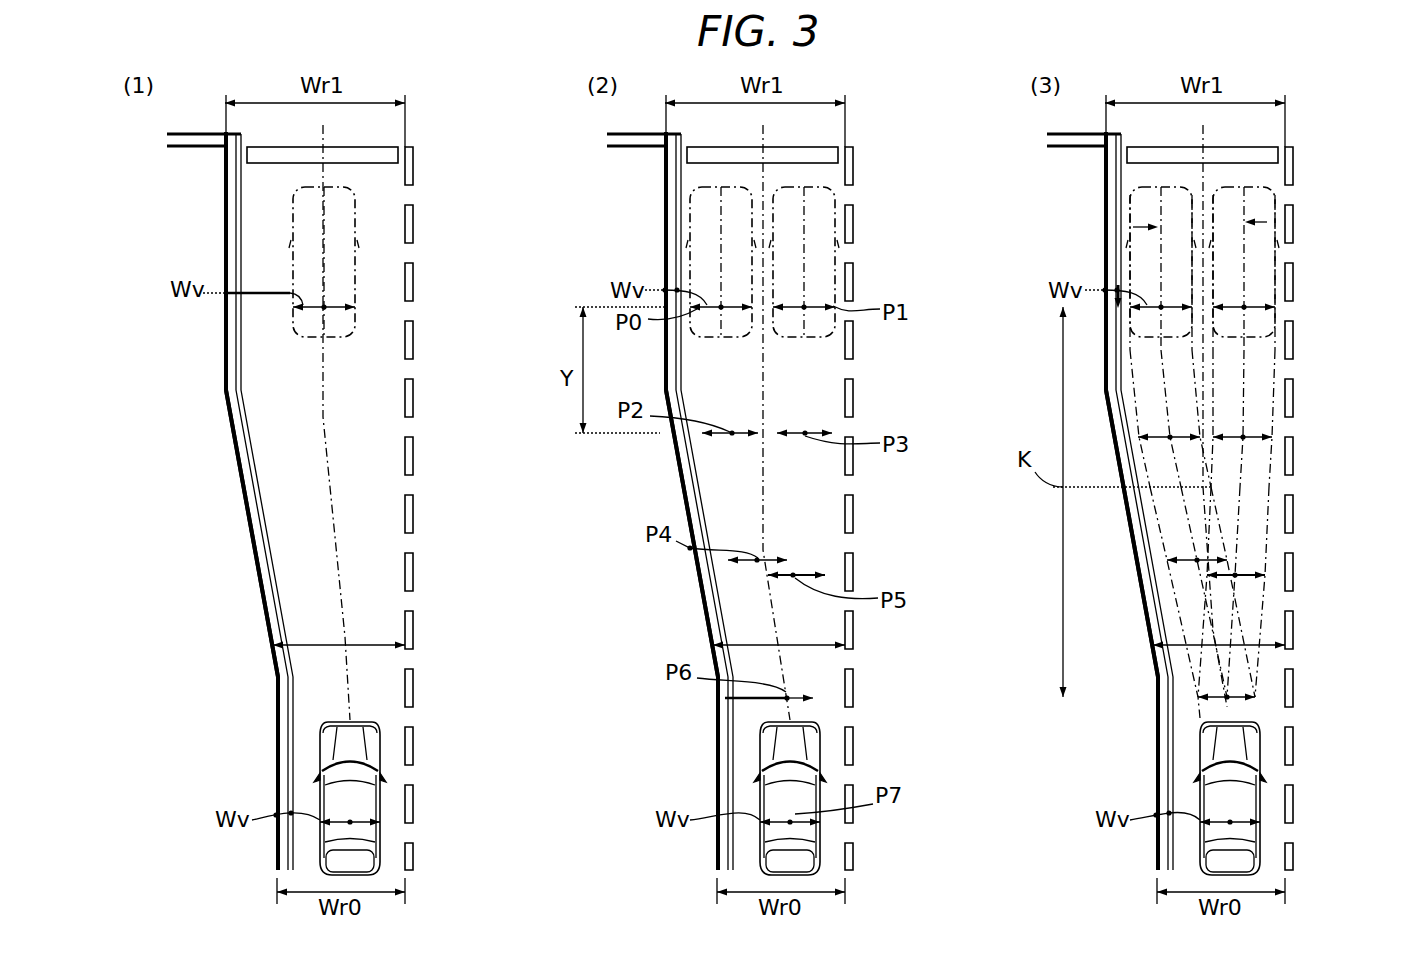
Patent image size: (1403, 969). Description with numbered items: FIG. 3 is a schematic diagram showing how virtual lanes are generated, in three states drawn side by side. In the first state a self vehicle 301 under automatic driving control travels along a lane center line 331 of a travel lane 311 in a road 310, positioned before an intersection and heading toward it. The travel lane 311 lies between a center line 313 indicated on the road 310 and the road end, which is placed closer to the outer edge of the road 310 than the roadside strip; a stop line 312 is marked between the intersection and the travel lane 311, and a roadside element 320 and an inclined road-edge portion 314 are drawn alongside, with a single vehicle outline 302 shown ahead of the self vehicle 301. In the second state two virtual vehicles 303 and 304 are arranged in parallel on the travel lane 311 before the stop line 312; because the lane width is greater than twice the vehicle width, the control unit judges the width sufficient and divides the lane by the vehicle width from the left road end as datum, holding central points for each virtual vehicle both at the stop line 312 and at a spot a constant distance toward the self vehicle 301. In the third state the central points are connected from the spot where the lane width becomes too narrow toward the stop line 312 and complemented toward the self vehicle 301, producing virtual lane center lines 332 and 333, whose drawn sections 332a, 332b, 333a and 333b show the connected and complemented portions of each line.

The self vehicle 301 is at (383, 826).
The other vehicle 302 is at (355, 263).
The virtual vehicle 303 is at (688, 245).
The virtual vehicle 304 is at (835, 250).
The road 310 is at (234, 472).
The travel lane 311 is at (290, 500).
The stop line 312 is at (368, 150).
The center line 313 is at (413, 515).
The road edge inclined section 314 is at (270, 615).
The wall 320 is at (190, 156).
The lane center line 331 is at (325, 355).
The virtual lane center line 332 is at (1100, 232).
The first section of predicted path 332 332a is at (1160, 366).
The second section of predicted path 332 332b is at (1180, 517).
The virtual lane center line 333 is at (1268, 222).
The first section of predicted path 333 333a is at (1277, 360).
The second section of predicted path 333 333b is at (1240, 535).